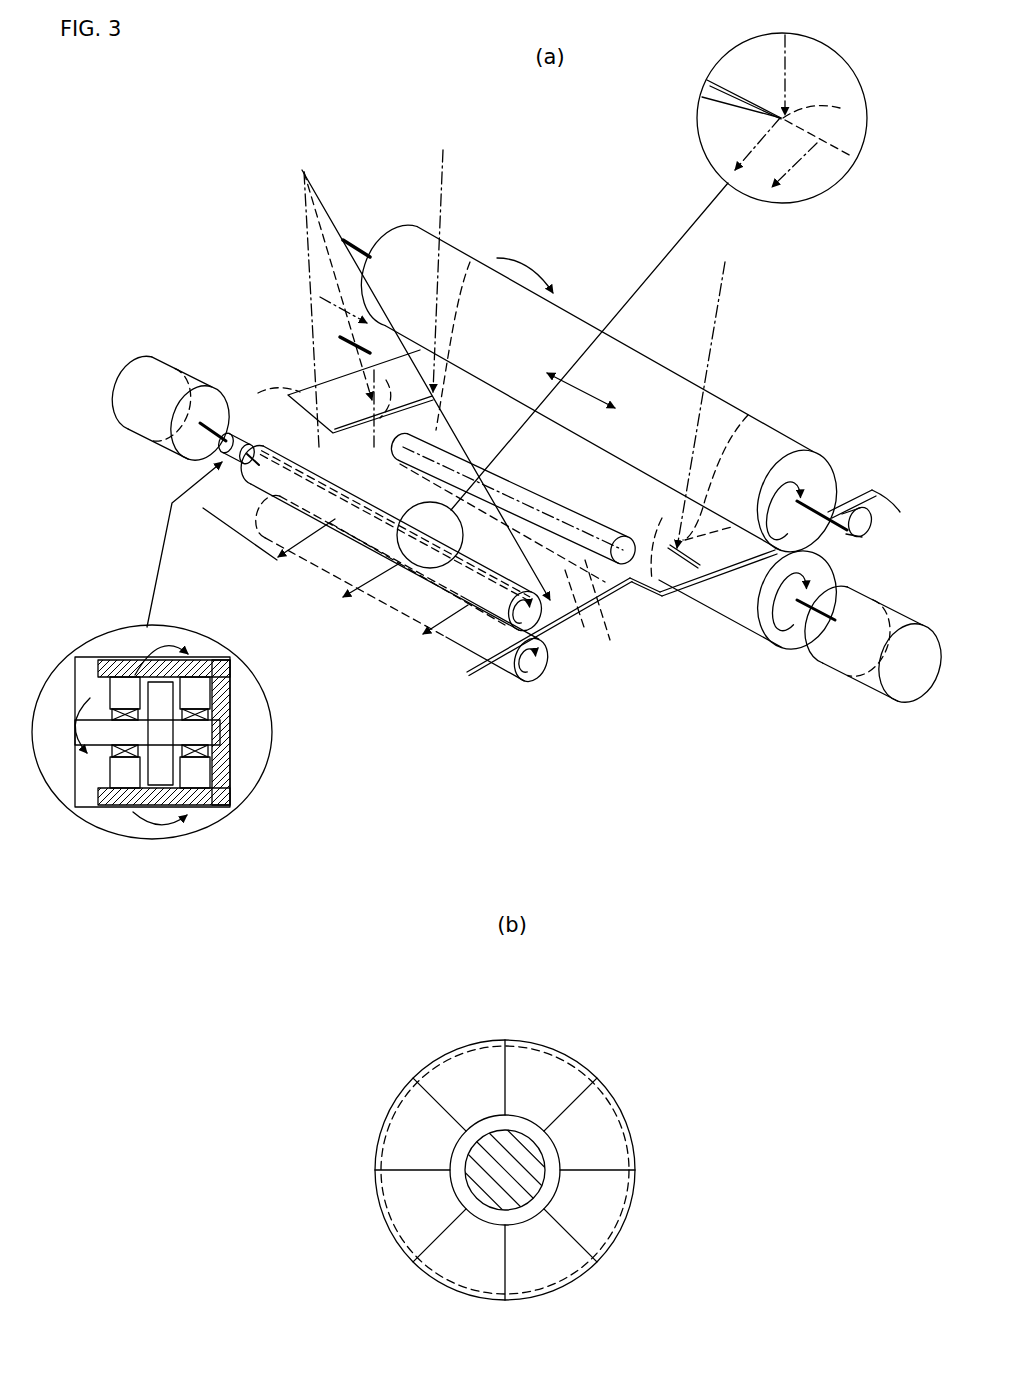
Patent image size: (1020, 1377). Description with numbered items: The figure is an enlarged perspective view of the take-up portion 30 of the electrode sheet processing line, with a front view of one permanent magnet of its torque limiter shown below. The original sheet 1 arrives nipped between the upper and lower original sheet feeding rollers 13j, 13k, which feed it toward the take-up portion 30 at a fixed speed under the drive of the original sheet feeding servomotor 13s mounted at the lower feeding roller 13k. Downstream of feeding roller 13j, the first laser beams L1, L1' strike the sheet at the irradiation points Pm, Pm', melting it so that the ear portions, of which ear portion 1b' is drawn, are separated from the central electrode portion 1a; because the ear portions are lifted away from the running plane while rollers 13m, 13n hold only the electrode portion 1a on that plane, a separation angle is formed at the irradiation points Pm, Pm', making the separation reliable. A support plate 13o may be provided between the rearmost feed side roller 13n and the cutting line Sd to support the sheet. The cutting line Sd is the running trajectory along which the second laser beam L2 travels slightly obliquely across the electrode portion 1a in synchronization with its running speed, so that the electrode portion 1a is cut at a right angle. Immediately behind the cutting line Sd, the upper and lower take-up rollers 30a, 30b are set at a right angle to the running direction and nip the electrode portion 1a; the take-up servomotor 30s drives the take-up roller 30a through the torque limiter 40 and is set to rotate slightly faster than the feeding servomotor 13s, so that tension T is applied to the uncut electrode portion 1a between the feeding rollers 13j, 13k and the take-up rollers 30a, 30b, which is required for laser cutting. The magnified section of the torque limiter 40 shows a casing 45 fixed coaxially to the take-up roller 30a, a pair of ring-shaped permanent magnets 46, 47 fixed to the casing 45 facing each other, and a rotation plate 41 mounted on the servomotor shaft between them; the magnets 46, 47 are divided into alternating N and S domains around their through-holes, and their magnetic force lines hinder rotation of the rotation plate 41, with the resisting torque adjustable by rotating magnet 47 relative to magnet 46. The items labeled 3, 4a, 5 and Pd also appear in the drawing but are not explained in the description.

The original sheet 1 is at (849, 478).
The electrode portion 1a is at (472, 400).
The ear portion 1b' is at (279, 366).
The recording medium strip 3 is at (485, 674).
The shaft end 4a is at (873, 517).
The joint portion 5 is at (658, 599).
The original sheet feeding roller 13j is at (778, 446).
The original sheet feeding roller 13k is at (753, 614).
The roller 13m is at (555, 497).
The feed side roller 13n is at (541, 612).
The support plate 13o is at (588, 612).
The original sheet feeding servomotor 13s is at (860, 677).
The take-up portion 30 is at (533, 690).
The take-up roller 30a is at (405, 617).
The take-up roller 30b is at (445, 652).
The take-up servomotor 30s is at (183, 380).
The torque limiter 40 is at (240, 432).
The rotation plate 41 is at (163, 767).
The casing 45 is at (138, 750).
The permanent magnet 46 is at (120, 792).
The permanent magnet 47 is at (202, 789).
The first laser beam L1 is at (721, 405).
The first laser beam L1' is at (463, 271).
The second laser beam L2 is at (313, 185).
The irradiation point Pm is at (723, 475).
The irradiation point Pm' is at (419, 324).
The detection plane Pd is at (803, 117).
The cutting line Sd is at (400, 518).
The tension T is at (307, 555).